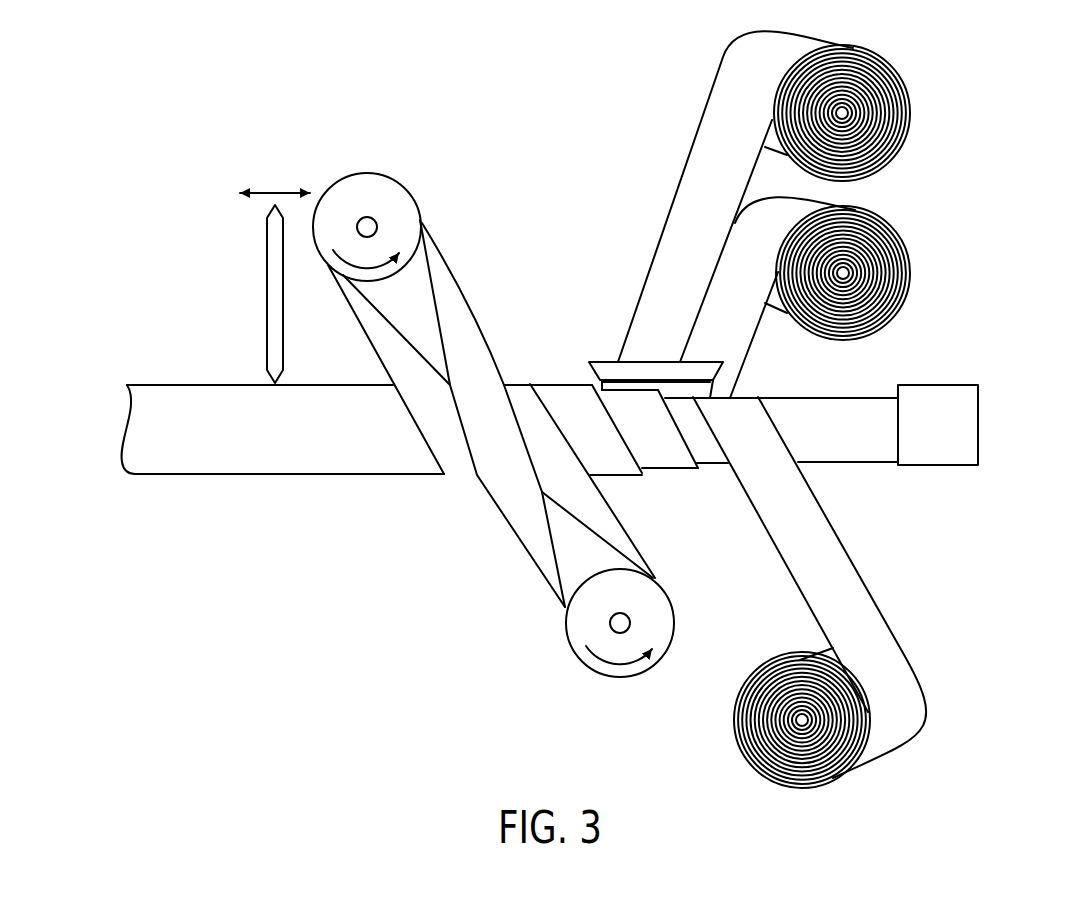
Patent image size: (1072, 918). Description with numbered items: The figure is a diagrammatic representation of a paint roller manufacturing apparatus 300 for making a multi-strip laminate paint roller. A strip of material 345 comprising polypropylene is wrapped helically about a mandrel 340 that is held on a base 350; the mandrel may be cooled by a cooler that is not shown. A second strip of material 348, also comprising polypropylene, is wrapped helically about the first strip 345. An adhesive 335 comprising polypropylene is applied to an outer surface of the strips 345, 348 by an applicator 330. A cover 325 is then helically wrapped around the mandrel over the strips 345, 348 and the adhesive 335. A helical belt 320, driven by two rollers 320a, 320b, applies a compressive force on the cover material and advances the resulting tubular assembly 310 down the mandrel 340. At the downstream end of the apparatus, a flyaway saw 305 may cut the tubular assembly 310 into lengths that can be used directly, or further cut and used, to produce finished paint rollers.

The paint roller manufacturing apparatus 300 is at (555, 158).
The flyaway saw 305 is at (267, 278).
The tubular assembly 310 is at (207, 398).
The helical belt 320 is at (501, 493).
The roller 320a is at (403, 213).
The roller 320b is at (578, 628).
The cover 325 is at (690, 212).
The applicator 330 is at (607, 367).
The adhesive 335 is at (703, 390).
The mandrel 340 is at (850, 450).
The strip of material 345 is at (788, 537).
The second strip of material 348 is at (733, 323).
The base 350 is at (967, 423).